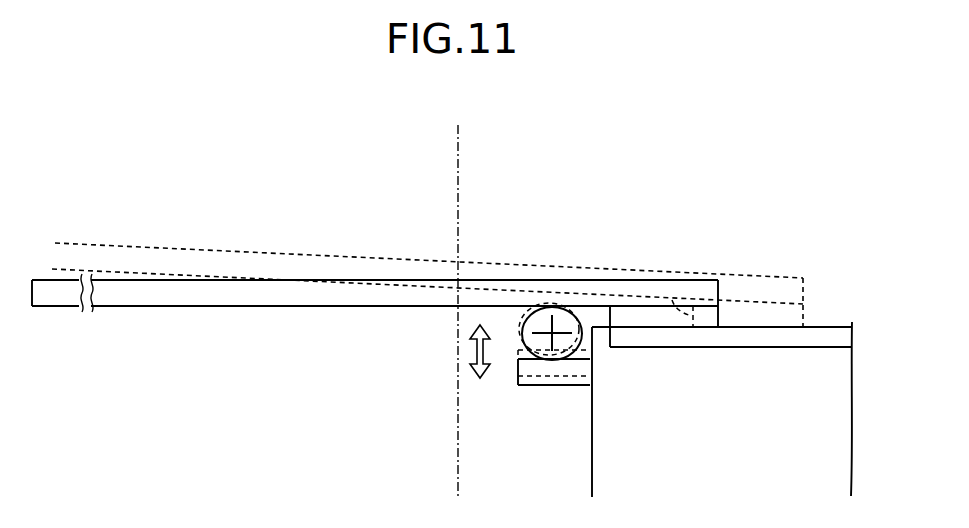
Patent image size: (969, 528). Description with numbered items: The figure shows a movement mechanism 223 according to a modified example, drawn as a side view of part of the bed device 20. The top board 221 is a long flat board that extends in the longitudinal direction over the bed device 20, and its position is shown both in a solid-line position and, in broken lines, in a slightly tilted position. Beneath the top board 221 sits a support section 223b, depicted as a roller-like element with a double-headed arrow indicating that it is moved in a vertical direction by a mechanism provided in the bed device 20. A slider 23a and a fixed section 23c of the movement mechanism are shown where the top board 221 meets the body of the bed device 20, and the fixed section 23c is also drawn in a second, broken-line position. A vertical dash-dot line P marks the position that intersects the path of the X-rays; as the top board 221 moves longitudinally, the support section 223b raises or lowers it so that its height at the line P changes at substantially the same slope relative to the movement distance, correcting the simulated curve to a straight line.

The reference axis / pivot line P is at (459, 197).
The top board 221 is at (163, 247).
The movement mechanism 223 is at (756, 248).
The bed device 20 is at (590, 480).
The slider 23a is at (838, 326).
The fixed section 23c is at (612, 318).
The support section 223b is at (520, 312).